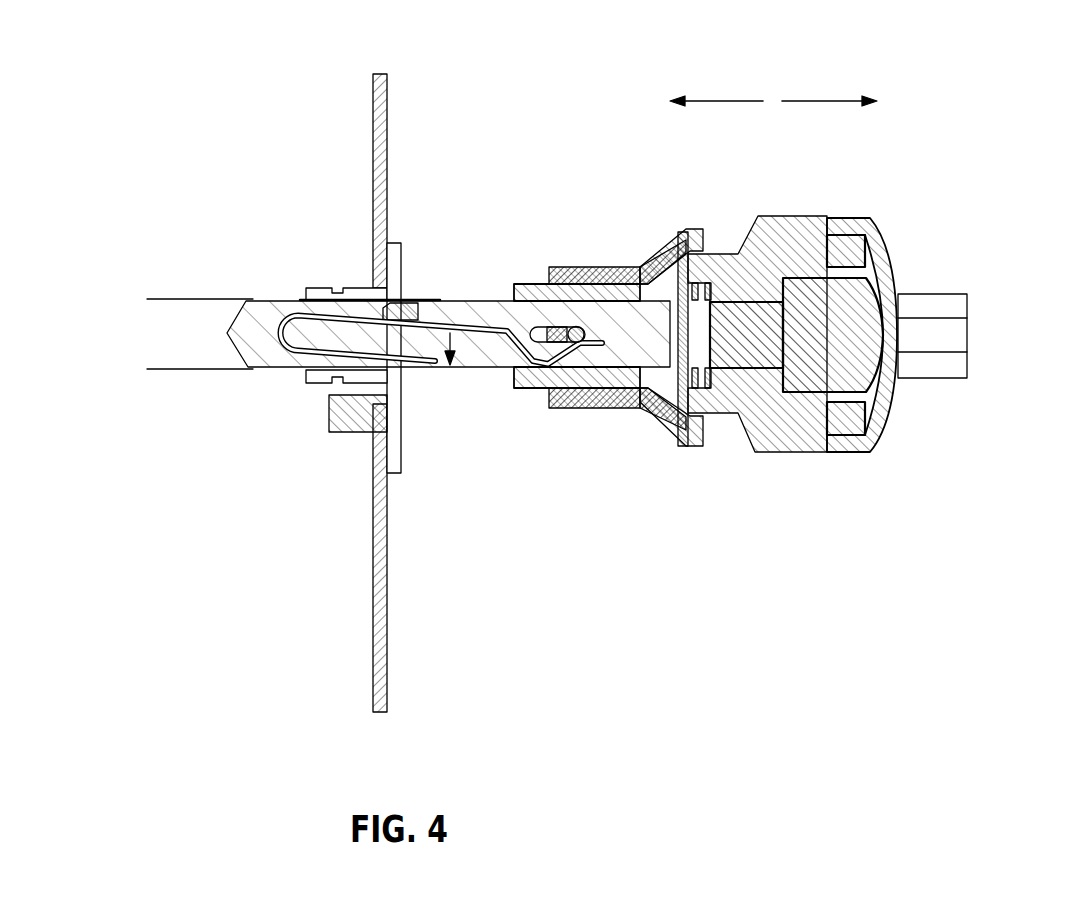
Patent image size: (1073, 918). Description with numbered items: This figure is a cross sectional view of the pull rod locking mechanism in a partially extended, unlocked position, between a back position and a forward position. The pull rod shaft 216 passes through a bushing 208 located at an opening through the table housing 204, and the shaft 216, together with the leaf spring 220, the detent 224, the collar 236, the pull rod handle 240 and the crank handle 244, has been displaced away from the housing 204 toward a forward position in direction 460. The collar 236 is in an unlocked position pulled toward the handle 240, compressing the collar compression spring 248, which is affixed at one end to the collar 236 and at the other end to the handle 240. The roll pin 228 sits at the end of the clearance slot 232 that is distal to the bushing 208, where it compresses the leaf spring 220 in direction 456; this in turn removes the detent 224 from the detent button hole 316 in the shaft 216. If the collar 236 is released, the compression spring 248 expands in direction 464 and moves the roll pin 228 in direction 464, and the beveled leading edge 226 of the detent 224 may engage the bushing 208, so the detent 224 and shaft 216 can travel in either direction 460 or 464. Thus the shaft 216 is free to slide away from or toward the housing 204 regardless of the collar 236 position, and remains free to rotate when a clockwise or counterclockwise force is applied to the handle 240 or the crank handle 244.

The table housing 204 is at (390, 567).
The bushing 208 is at (400, 465).
The pull rod shaft 216 is at (252, 372).
The leaf spring 220 is at (428, 366).
The detent 224 is at (425, 312).
The beveled leading edge 226 is at (398, 302).
The roll pin 228 is at (577, 329).
The clearance slot 232 is at (548, 395).
The collar 236 is at (656, 266).
The pull rod handle 240 is at (777, 455).
The crank handle 244 is at (930, 378).
The collar compression spring 248 is at (712, 388).
The detent button hole 316 is at (440, 305).
The direction 456 is at (453, 341).
The direction 460 is at (823, 101).
The direction 464 is at (740, 101).